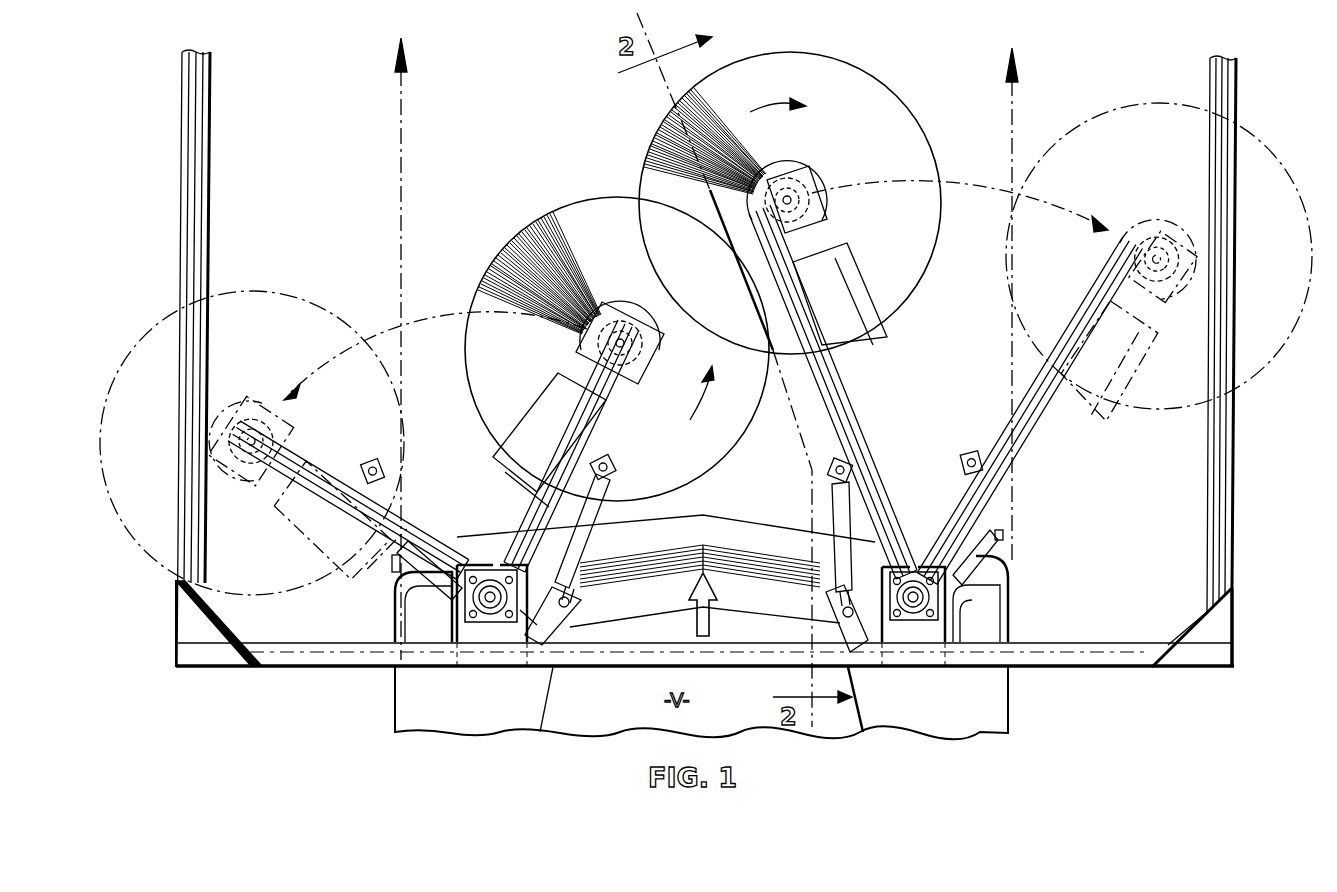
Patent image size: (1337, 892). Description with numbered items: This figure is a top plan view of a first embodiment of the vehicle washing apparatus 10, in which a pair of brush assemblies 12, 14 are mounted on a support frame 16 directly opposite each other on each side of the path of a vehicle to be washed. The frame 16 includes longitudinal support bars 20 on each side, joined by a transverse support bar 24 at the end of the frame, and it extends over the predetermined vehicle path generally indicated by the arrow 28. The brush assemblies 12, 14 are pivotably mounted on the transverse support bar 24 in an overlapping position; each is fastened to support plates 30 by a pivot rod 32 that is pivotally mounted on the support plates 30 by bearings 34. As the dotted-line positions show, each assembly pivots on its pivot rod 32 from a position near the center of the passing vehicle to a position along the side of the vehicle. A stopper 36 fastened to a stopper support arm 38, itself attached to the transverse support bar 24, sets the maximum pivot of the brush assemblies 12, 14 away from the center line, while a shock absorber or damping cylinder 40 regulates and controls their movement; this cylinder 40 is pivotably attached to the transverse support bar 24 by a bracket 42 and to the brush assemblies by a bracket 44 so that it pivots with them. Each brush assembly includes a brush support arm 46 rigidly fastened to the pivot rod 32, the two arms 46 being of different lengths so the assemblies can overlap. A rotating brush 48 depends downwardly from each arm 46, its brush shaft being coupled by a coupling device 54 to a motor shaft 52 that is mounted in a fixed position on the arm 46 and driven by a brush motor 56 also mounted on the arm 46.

The vehicle washing apparatus 10 is at (582, 188).
The brush assembly 12 is at (524, 214).
The brush assembly 14 is at (656, 131).
The support frame 16 is at (326, 672).
The longitudinal support bar 20 is at (192, 135).
The transverse support bar 24 is at (1062, 668).
The arrow indicating vehicle path 28 is at (692, 630).
The support plate 30 is at (467, 635).
The pivot rod 32 is at (492, 600).
The bearing 34 is at (462, 598).
The stopper 36 is at (422, 548).
The stopper support arm 38 is at (405, 580).
The shock absorber or damping cylinder 40 is at (598, 510).
The bracket 42 is at (548, 628).
The bracket 44 is at (616, 466).
The brush support arm 46 is at (622, 425).
The rotating brush 48 is at (274, 312).
The motor shaft 52 is at (621, 325).
The coupling device 54 is at (653, 306).
The brush motor 56 is at (548, 392).